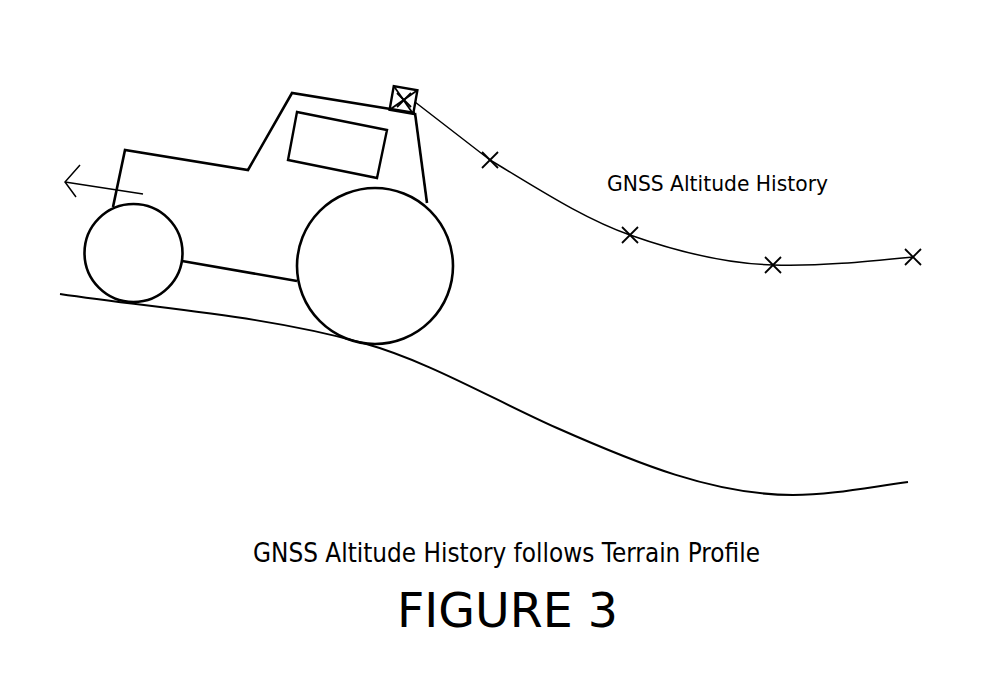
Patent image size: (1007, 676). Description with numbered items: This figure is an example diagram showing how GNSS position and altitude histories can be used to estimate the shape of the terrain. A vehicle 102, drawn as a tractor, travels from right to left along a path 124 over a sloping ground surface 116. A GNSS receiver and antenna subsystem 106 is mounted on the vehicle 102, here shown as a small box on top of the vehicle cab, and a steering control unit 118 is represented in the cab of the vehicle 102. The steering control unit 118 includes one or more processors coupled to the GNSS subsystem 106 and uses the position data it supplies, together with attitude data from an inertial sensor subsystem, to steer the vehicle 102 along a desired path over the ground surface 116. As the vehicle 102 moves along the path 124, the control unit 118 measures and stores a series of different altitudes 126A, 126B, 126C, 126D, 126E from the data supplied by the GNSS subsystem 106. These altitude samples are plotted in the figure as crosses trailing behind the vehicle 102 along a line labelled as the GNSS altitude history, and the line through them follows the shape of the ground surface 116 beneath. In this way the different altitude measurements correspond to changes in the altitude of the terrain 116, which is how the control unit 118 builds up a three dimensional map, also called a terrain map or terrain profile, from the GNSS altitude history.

The vehicle 102 is at (273, 127).
The GNSS receiver and antenna subsystem 106 is at (391, 104).
The ground surface 116 is at (558, 425).
The steering control unit 118 is at (354, 157).
The path 124 is at (103, 185).
The altitude 126A is at (913, 266).
The altitude 126B is at (773, 274).
The altitude 126C is at (631, 244).
The altitude 126D is at (492, 168).
The altitude 126E is at (447, 83).